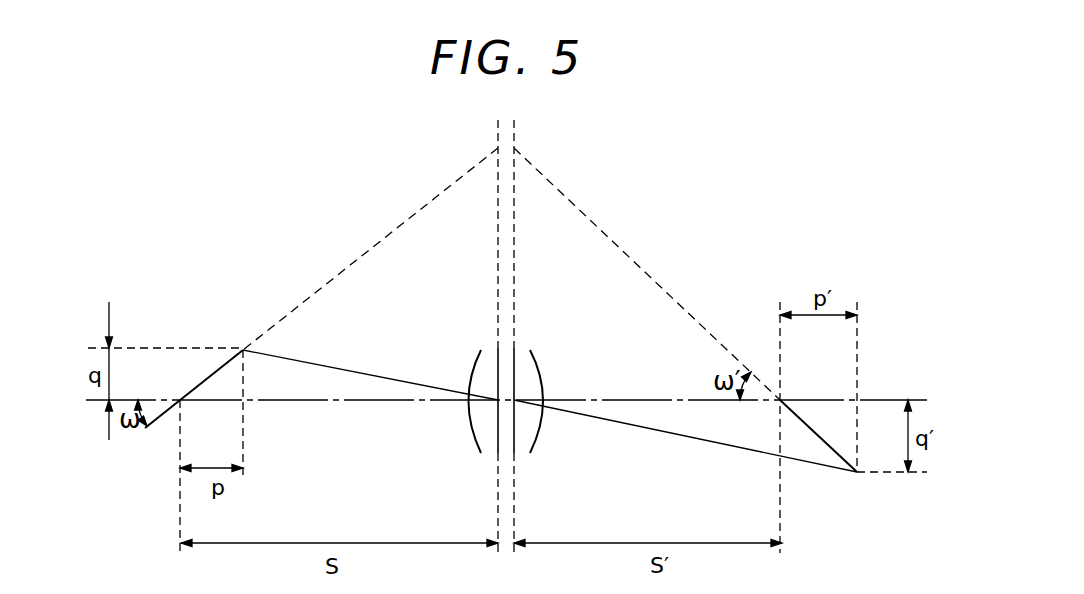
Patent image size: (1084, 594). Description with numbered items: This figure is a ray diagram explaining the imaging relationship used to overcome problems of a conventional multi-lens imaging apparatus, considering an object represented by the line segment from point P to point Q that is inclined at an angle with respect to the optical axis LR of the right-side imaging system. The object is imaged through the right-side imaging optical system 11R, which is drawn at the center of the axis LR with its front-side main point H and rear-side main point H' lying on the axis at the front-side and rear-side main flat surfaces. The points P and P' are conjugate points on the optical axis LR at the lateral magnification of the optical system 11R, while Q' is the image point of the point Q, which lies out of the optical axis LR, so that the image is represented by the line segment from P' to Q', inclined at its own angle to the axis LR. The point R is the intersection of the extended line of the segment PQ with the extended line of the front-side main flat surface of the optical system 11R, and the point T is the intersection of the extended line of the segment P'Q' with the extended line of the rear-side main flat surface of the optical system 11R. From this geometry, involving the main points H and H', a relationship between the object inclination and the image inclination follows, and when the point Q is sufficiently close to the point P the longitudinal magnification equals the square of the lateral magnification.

The right-side imaging optical system 11R is at (538, 356).
The optical axis LR is at (880, 400).
The front-side main point H is at (465, 336).
The rear-side main point H' is at (551, 336).
The intersection of extended line segment PQ with extended front-side main flat surf R is at (370, 238).
The intersection of extended line segment P'Q' with extended rear-side main flat sur T is at (647, 263).
The object point on optical axis P is at (194, 451).
The object point out of optical axis Q is at (293, 398).
The image point on optical axis P' is at (804, 427).
The image point of point Q Q' is at (720, 405).